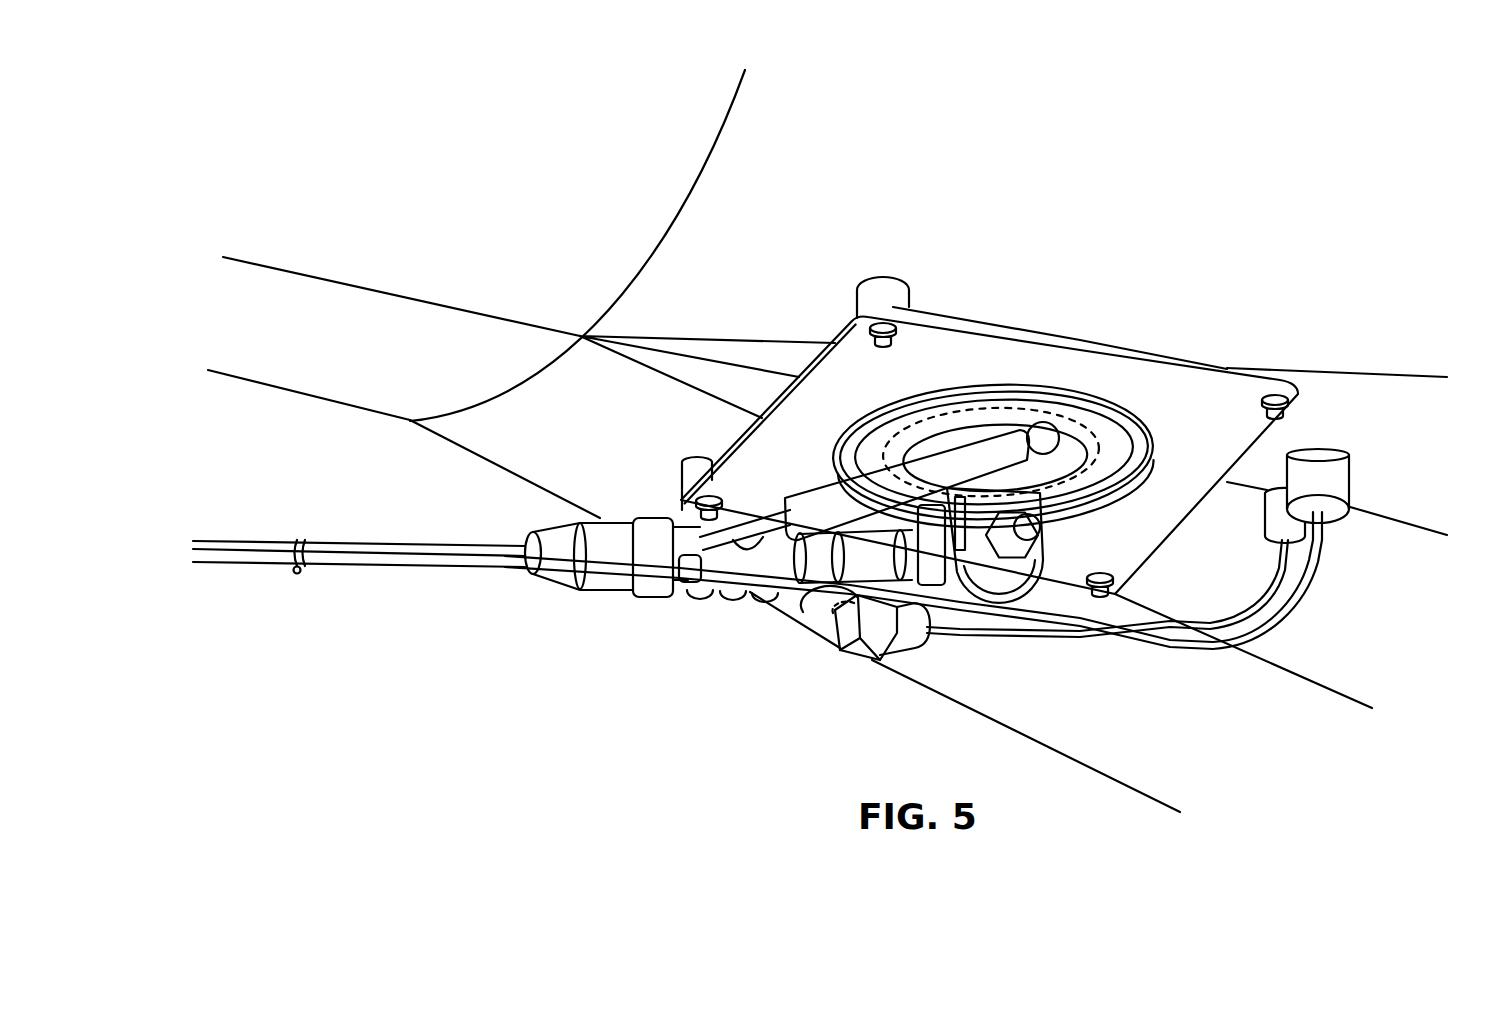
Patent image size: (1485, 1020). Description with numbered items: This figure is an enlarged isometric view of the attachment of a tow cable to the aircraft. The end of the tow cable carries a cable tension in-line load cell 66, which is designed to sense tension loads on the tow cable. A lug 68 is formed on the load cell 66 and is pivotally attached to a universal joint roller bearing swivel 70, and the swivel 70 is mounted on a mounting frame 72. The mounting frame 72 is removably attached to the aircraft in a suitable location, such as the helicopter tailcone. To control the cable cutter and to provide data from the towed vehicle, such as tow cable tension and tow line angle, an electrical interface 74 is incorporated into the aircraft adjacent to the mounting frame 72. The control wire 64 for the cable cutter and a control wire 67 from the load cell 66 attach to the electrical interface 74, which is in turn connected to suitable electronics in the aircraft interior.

The control wire 64 is at (1310, 578).
The cable tension in-line load cell 66 is at (842, 653).
The control wire 67 is at (1270, 590).
The lug 68 is at (950, 565).
The universal joint roller bearing swivel 70 is at (1047, 547).
The mounting frame 72 is at (780, 336).
The electrical interface 74 is at (1277, 480).